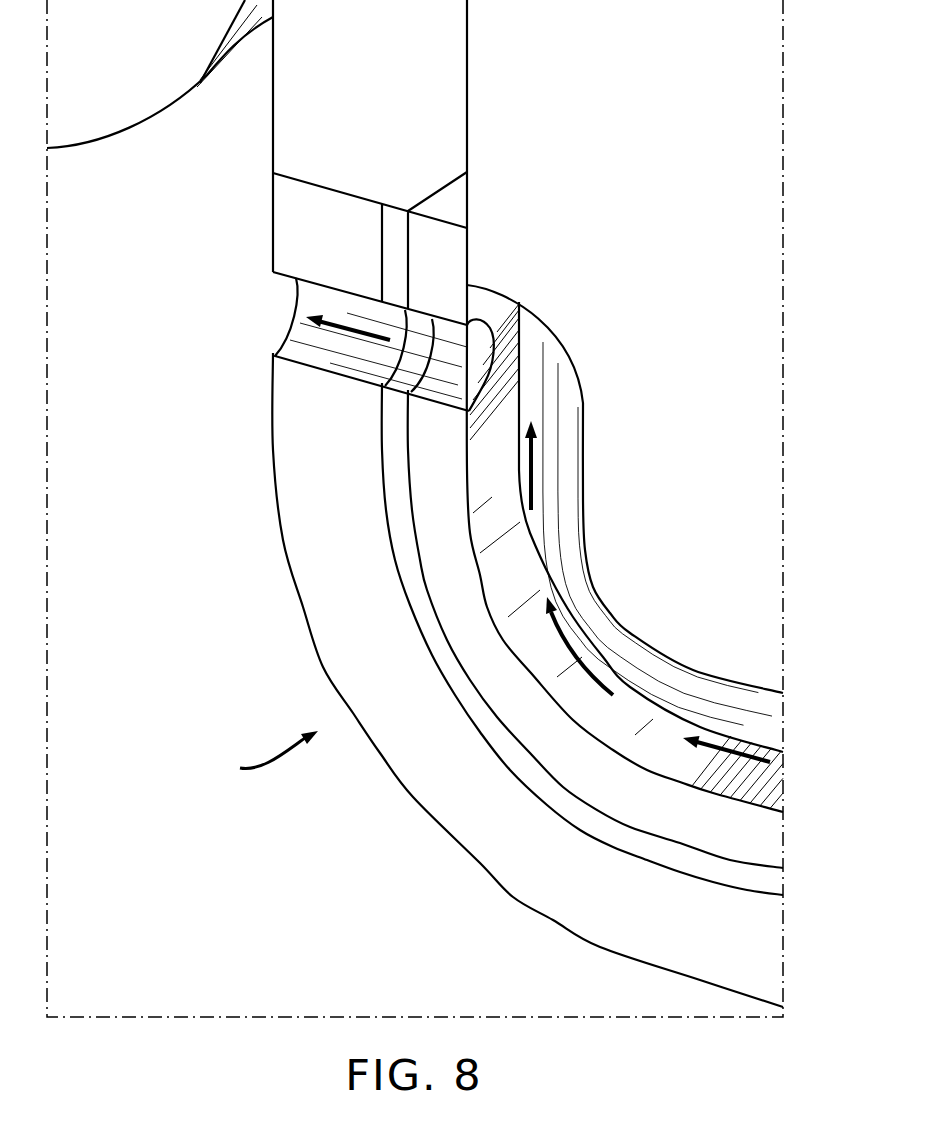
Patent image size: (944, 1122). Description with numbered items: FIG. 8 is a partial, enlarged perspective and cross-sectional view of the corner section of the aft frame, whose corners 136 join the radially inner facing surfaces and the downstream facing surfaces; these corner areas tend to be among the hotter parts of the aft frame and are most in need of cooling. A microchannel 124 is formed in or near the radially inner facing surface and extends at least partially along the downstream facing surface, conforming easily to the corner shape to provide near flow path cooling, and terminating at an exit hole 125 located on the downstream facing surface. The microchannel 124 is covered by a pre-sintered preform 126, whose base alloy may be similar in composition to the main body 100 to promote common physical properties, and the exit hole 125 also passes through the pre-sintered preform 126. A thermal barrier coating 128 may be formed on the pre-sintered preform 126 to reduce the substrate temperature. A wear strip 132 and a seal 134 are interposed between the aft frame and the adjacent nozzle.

The main body 100 is at (628, 131).
The microchannel 124 is at (549, 427).
The exit hole 125 is at (277, 300).
The pre-sintered preform 126 is at (762, 828).
The thermal barrier coating 128 is at (510, 830).
The wear strip 132 is at (345, 115).
The seal 134 is at (95, 78).
The corners 136 is at (252, 756).